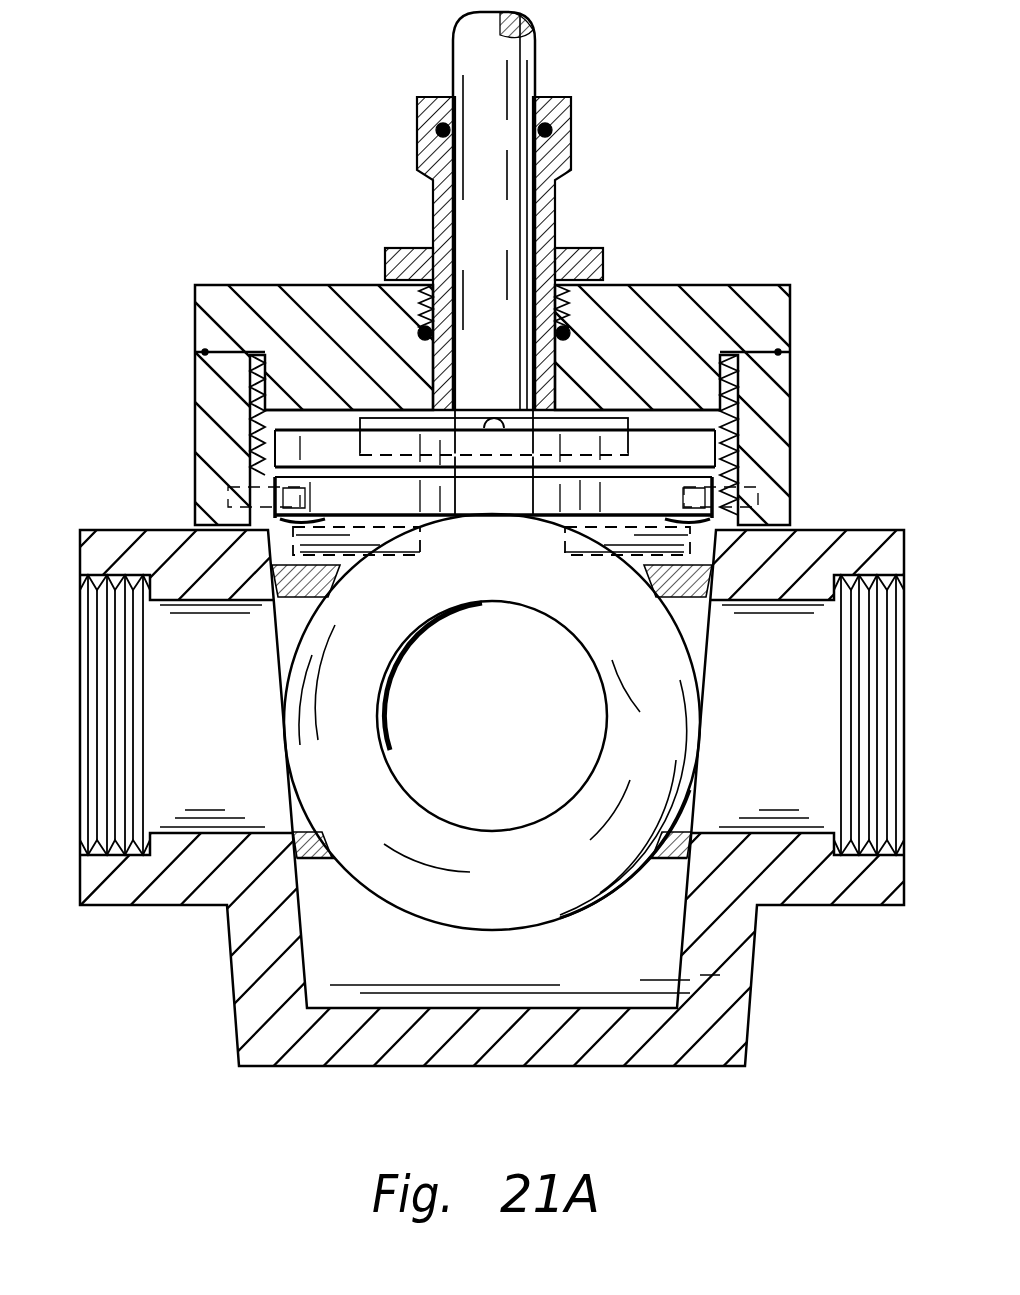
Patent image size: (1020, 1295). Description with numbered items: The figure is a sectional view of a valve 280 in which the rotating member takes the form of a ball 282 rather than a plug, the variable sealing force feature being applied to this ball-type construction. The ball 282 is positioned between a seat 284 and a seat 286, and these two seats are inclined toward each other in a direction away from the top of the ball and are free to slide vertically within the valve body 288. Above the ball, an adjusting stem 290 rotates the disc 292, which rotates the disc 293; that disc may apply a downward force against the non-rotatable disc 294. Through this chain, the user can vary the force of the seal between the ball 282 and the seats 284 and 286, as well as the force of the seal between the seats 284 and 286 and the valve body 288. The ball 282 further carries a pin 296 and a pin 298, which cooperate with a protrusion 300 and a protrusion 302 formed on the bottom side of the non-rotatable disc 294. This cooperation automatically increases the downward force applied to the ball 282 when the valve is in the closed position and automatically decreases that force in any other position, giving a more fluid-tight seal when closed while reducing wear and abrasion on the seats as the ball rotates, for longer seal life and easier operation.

The valve 280 is at (216, 218).
The ball 282 is at (476, 895).
The seat 284 is at (322, 860).
The seat 286 is at (622, 850).
The valve body 288 is at (720, 1040).
The adjusting stem 290 is at (557, 232).
The disc 292 is at (598, 420).
The disc 293 is at (650, 440).
The non-rotatable disc 294 is at (647, 495).
The pin 296 is at (357, 528).
The pin 298 is at (630, 528).
The protrusion 300 is at (275, 520).
The protrusion 302 is at (745, 528).